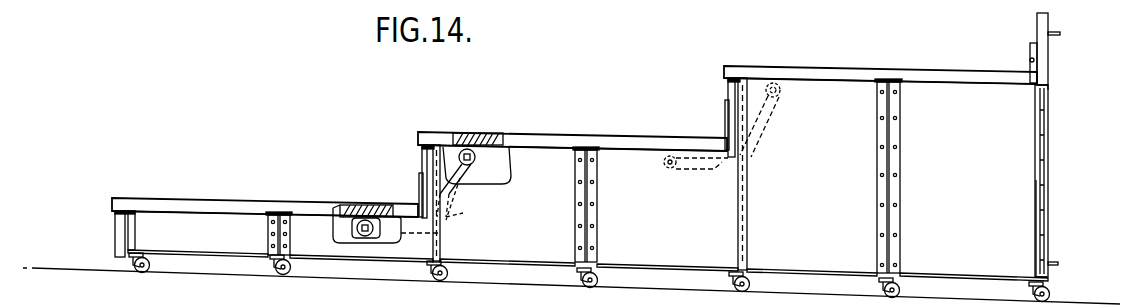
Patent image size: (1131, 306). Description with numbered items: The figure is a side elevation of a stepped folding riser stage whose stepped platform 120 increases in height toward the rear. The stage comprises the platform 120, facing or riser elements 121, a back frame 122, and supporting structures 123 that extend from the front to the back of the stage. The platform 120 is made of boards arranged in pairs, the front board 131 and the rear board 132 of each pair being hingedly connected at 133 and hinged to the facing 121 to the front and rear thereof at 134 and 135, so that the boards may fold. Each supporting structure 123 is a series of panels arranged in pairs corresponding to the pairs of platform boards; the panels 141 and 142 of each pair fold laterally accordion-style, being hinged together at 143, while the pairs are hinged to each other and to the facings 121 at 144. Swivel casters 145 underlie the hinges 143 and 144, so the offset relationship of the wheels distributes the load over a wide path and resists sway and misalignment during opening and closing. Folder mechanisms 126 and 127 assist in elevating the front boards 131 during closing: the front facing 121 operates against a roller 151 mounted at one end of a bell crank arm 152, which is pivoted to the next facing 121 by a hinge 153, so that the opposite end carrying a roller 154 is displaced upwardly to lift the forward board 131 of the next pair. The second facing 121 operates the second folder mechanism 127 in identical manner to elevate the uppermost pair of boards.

The stepped platform 120 is at (575, 131).
The facing or riser element 121 is at (117, 229).
The back frame 122 is at (1049, 80).
The supporting structure 123 is at (1017, 185).
The folder mechanism 126 is at (449, 207).
The second folder mechanism 127 is at (705, 176).
The front board 131 is at (197, 197).
The rear board 132 is at (325, 200).
The hinge connection between boards 133 is at (267, 213).
The front hinge to facing 134 is at (115, 213).
The rear hinge to facing 135 is at (419, 178).
The panel 141 is at (197, 248).
The panel 142 is at (365, 251).
The hinge between panels 143 is at (272, 240).
The hinge to facing 144 is at (136, 226).
The swivel caster 145 is at (133, 268).
The roller 151 is at (332, 228).
The bell crank arm 152 is at (446, 217).
The hinge 153 is at (463, 186).
The roller 154 is at (495, 153).